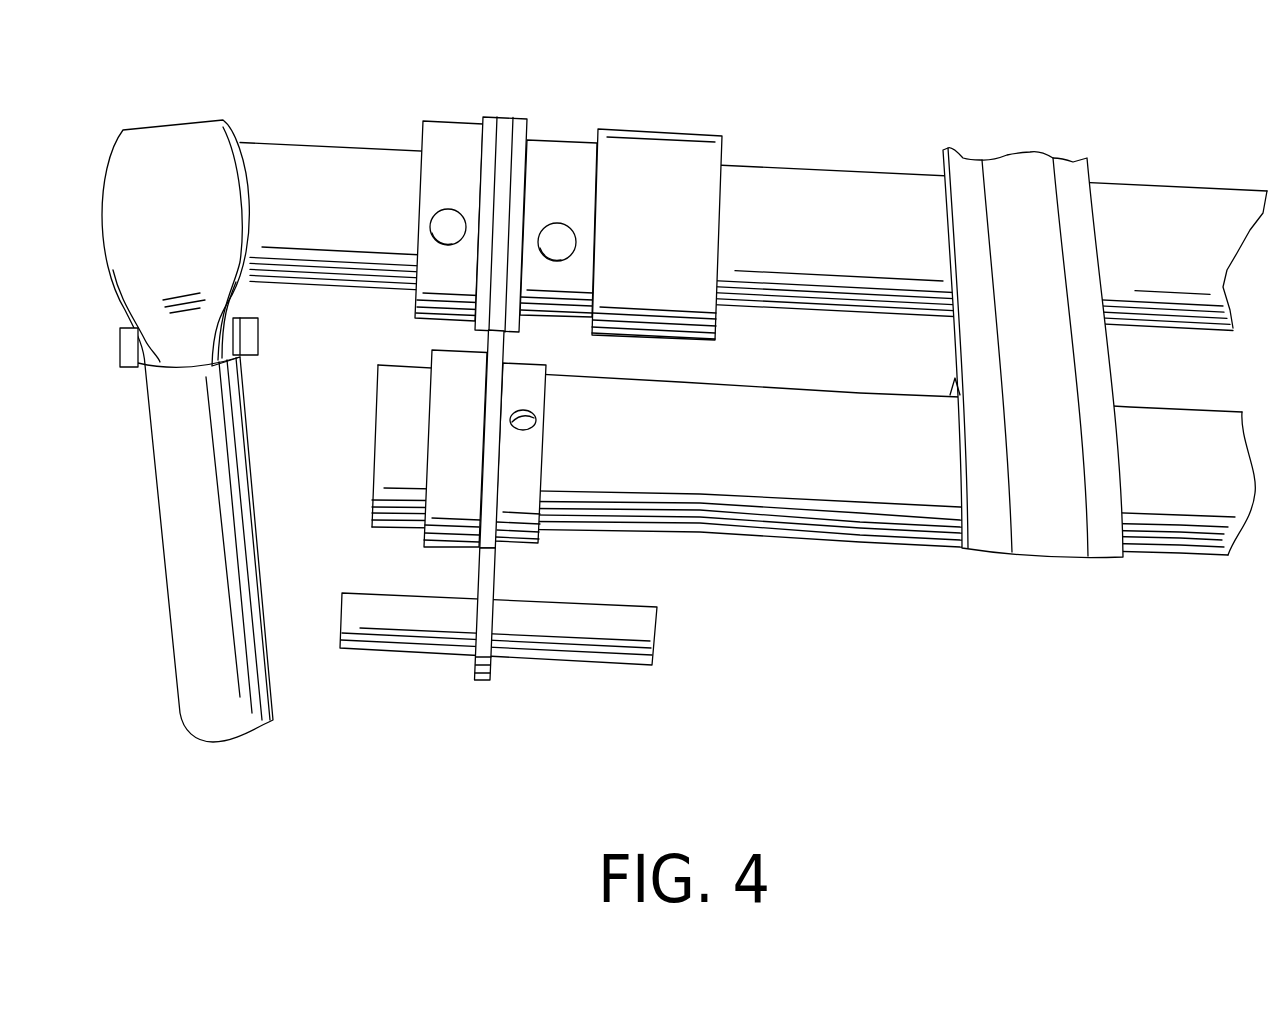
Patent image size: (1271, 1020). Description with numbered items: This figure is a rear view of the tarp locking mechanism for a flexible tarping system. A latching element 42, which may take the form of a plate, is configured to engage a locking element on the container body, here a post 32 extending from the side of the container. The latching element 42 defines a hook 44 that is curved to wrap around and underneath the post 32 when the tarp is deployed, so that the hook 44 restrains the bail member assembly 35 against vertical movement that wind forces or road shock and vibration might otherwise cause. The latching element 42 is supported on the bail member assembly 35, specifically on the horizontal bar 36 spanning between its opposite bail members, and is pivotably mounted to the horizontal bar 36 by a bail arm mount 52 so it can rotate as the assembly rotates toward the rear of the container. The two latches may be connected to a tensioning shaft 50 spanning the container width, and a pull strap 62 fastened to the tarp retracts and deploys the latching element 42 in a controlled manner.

The post 32 is at (396, 636).
The bail member assembly 35 is at (142, 470).
The horizontal bar 36 is at (312, 162).
The latching element 42 is at (470, 339).
The hook 44 is at (482, 619).
The tensioning shaft 50 is at (397, 396).
The bail arm mount 52 is at (558, 158).
The pull strap 62 is at (1033, 248).